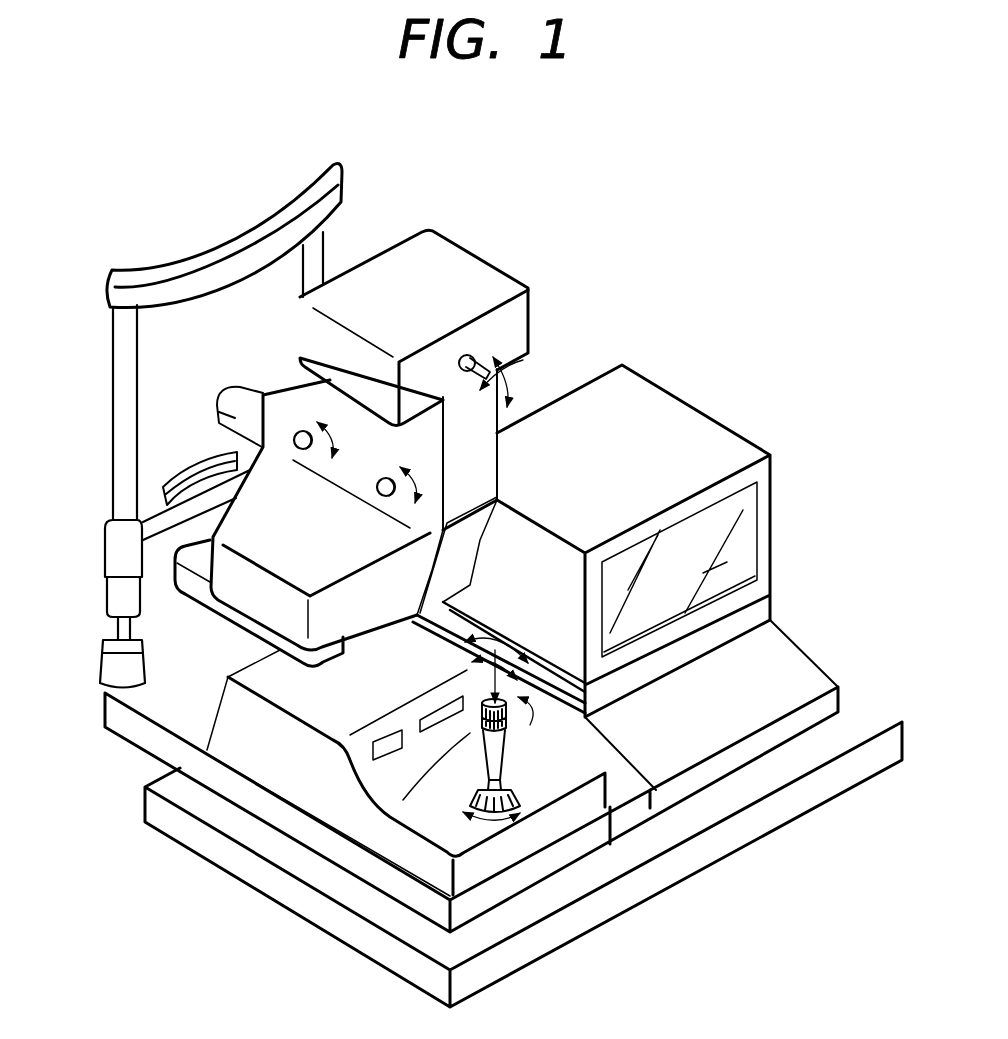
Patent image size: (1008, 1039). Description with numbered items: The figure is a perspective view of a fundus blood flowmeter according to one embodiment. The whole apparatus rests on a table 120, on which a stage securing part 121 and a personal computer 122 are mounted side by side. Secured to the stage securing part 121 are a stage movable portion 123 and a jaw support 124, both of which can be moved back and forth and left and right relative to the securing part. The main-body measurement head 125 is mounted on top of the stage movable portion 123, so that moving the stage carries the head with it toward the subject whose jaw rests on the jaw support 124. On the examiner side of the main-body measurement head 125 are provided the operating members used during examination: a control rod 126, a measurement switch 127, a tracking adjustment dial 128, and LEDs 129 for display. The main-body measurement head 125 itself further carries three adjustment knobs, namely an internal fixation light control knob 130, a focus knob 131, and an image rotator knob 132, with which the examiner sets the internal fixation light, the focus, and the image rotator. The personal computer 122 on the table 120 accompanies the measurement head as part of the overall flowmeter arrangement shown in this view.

The table 120 is at (843, 780).
The stage securing part 121 is at (433, 903).
The personal computer 122 is at (752, 541).
The stage movable portion 123 is at (335, 690).
The jaw support 124 is at (215, 482).
The main-body measurement head 125 is at (523, 336).
The control rod 126 is at (537, 737).
The measurement switch 127 is at (470, 733).
The tracking adjustment dial 128 is at (510, 782).
The LEDs for display 129 is at (467, 690).
The internal fixation light control knob 130 is at (478, 360).
The focus knob 131 is at (383, 480).
The image rotator knob 132 is at (300, 432).